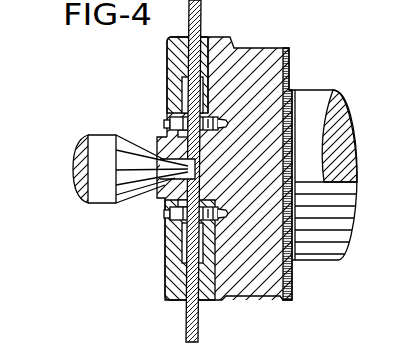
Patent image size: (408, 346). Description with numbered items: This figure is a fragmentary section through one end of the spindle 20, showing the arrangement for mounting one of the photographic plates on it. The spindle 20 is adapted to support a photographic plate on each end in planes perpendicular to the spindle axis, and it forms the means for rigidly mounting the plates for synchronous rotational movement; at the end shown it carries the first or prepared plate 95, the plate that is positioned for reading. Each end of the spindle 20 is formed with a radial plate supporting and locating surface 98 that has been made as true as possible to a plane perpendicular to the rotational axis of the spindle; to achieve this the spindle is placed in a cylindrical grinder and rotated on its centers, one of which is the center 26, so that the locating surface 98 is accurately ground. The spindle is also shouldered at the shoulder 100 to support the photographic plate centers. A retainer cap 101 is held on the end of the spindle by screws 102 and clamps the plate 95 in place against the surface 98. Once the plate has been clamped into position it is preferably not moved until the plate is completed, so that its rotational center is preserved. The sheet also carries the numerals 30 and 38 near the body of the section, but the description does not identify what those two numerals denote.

The spindle 20 is at (317, 97).
The center 26 is at (92, 147).
The assembly 30 is at (375, 12).
The body 38 is at (258, 300).
The first or prepared plate 95 is at (203, 8).
The radial plate supporting and locating surface 98 is at (168, 53).
The shoulder 100 is at (180, 113).
The retainer cap 101 is at (172, 274).
The screws 102 is at (167, 128).